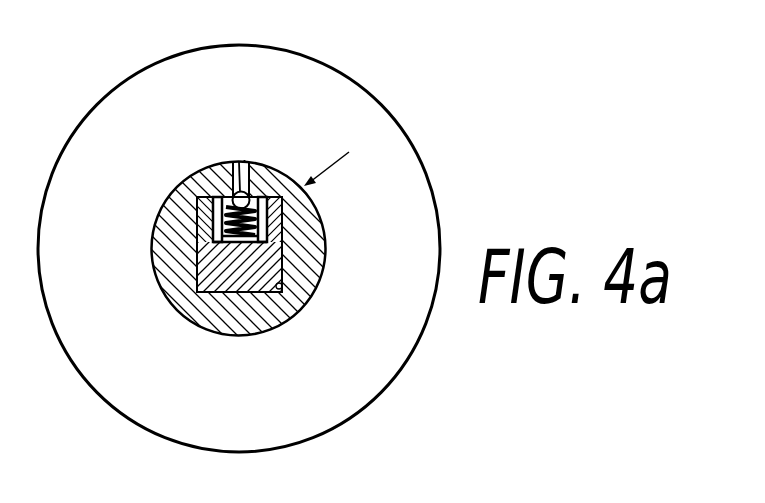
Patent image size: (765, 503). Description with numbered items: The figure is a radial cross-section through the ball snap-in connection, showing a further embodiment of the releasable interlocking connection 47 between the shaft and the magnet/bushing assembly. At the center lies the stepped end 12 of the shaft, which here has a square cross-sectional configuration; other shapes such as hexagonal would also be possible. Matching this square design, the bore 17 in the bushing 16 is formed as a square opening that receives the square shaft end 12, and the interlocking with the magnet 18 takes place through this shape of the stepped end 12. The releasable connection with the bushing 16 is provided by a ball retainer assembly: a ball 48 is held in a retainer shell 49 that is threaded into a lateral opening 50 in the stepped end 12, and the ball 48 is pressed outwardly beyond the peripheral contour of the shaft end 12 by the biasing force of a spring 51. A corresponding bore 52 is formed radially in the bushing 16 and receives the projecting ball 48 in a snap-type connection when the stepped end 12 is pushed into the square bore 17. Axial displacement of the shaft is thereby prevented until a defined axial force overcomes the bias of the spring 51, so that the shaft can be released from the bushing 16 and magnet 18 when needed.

The stepped end 12 is at (273, 257).
The bushing 16 is at (238, 322).
The bore 17 is at (291, 293).
The magnet 18 is at (382, 374).
The releasable interlocking connection 47 is at (340, 157).
The ball 48 is at (247, 193).
The retainer shell 49 is at (265, 214).
The lateral opening 50 is at (210, 244).
The spring 51 is at (218, 206).
The bore 52 is at (239, 162).